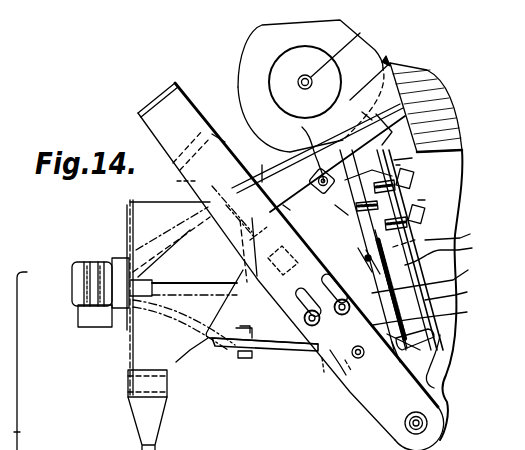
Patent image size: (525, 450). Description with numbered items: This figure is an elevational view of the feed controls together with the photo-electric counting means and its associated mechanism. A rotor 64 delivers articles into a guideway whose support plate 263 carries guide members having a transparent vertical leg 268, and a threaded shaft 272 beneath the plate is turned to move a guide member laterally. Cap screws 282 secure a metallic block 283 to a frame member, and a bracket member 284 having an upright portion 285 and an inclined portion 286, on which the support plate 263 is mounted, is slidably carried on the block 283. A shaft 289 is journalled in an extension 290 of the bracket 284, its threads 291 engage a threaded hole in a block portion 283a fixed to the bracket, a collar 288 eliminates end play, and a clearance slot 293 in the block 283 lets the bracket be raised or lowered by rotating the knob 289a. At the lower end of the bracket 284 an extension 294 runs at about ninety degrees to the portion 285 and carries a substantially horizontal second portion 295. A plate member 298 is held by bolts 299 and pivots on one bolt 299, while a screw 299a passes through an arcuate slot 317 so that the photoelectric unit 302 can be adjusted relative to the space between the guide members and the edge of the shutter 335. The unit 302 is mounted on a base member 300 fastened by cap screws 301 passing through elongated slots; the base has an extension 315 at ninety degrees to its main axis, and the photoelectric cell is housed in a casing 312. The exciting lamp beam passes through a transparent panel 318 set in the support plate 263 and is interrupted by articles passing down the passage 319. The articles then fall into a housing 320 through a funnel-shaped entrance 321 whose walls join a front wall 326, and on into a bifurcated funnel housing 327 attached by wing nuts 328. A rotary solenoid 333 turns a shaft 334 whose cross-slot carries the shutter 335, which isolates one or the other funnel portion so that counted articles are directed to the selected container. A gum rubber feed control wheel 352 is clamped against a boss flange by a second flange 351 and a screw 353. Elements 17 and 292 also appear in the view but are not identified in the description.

The frame member 17 is at (389, 64).
The rotor 64 is at (432, 80).
The support plate 263 is at (378, 122).
The transparent vertical leg 268 is at (300, 179).
The shaft 272 is at (302, 158).
The cap screws 282 is at (413, 173).
The metallic block 283 is at (454, 253).
The block portion 283a is at (469, 231).
The bracket member 284 is at (340, 211).
The upright portion 285 is at (368, 168).
The inclined portion 286 is at (288, 206).
The collar 288 is at (462, 291).
The shaft 289 is at (435, 277).
The knob 289a is at (450, 372).
The extension 290 is at (435, 313).
The threads 291 is at (372, 268).
The connecting member 292 is at (421, 238).
The clearance slot 293 is at (358, 240).
The extension 294 is at (418, 352).
The second portion 295 is at (278, 352).
The plate member 298 is at (357, 396).
The bolts 299 is at (428, 430).
The screw 299a is at (409, 364).
The base member 300 is at (242, 264).
The cap screws 301 is at (278, 258).
The photoelectric unit 302 is at (225, 141).
The casing 312 is at (173, 183).
The extension 315 is at (308, 375).
The arcuate slot 317 is at (347, 376).
The transparent panel 318 is at (269, 236).
The passage 319 is at (422, 190).
The housing 320 is at (127, 218).
The funnel-shaped entrance 321 is at (257, 164).
The front wall 326 is at (126, 240).
The bifurcated funnel housing 327 is at (127, 347).
The wing nuts 328 is at (144, 288).
The rotary solenoid 333 is at (84, 268).
The shaft 334 is at (153, 266).
The shutter 335 is at (190, 233).
The second flange 351 is at (275, 85).
The feed control wheel 352 is at (250, 62).
The screw 353 is at (346, 44).